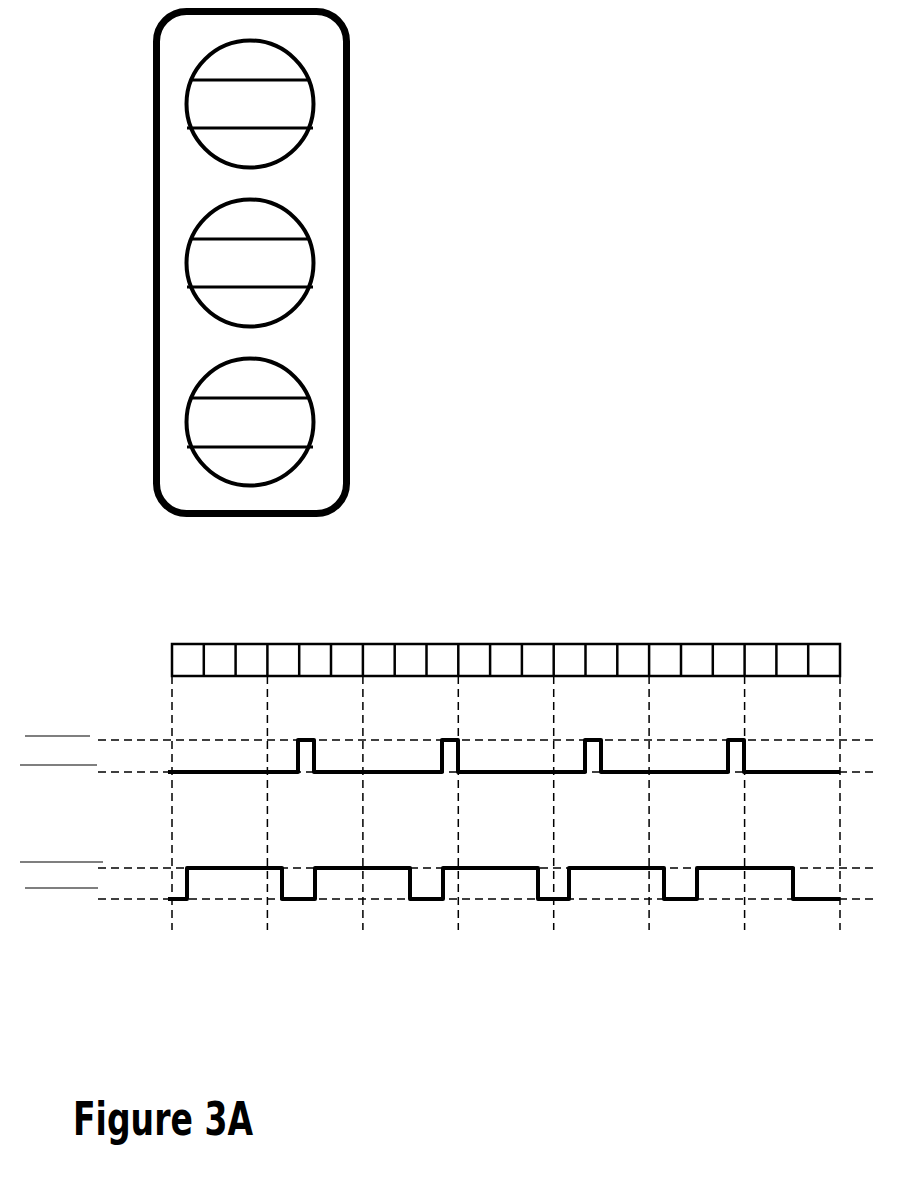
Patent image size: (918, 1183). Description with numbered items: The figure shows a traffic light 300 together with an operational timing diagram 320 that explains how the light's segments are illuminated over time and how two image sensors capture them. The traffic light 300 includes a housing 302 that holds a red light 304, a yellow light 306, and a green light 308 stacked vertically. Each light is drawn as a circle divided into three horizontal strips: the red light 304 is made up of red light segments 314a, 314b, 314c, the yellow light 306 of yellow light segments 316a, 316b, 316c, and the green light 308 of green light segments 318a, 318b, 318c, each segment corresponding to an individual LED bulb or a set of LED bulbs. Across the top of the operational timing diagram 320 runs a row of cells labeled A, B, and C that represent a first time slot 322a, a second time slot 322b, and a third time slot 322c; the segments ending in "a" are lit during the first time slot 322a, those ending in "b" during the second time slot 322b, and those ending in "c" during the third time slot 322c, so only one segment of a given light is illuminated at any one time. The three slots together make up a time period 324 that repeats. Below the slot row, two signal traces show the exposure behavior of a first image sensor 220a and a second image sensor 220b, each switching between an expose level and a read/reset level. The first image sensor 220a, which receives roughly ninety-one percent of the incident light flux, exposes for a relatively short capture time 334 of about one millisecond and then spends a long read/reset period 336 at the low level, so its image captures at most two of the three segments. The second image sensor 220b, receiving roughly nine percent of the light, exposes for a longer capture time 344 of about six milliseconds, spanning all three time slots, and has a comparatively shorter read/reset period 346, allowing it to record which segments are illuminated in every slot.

The traffic light 300 is at (453, 215).
The housing 302 is at (350, 49).
The red light 304 is at (305, 104).
The yellow light 306 is at (313, 263).
The green light 308 is at (311, 422).
The red light segment 314a is at (233, 72).
The red light segment 314b is at (233, 115).
The red light segment 314c is at (233, 158).
The yellow light segment 316a is at (233, 231).
The yellow light segment 316b is at (233, 274).
The yellow light segment 316c is at (233, 317).
The green light segment 318a is at (233, 390).
The green light segment 318b is at (233, 433).
The green light segment 318c is at (233, 476).
The operational timing diagram 320 is at (605, 612).
The first time slot 322a is at (177, 643).
The second time slot 322b is at (211, 643).
The third time slot 322c is at (240, 643).
The time period 324 is at (267, 708).
The capture time 334 is at (272, 725).
The read/reset period 336 is at (390, 771).
The capture time 344 is at (187, 854).
The read/reset period 346 is at (304, 906).
The image sensor 220a is at (460, 726).
The image sensor 220b is at (460, 881).